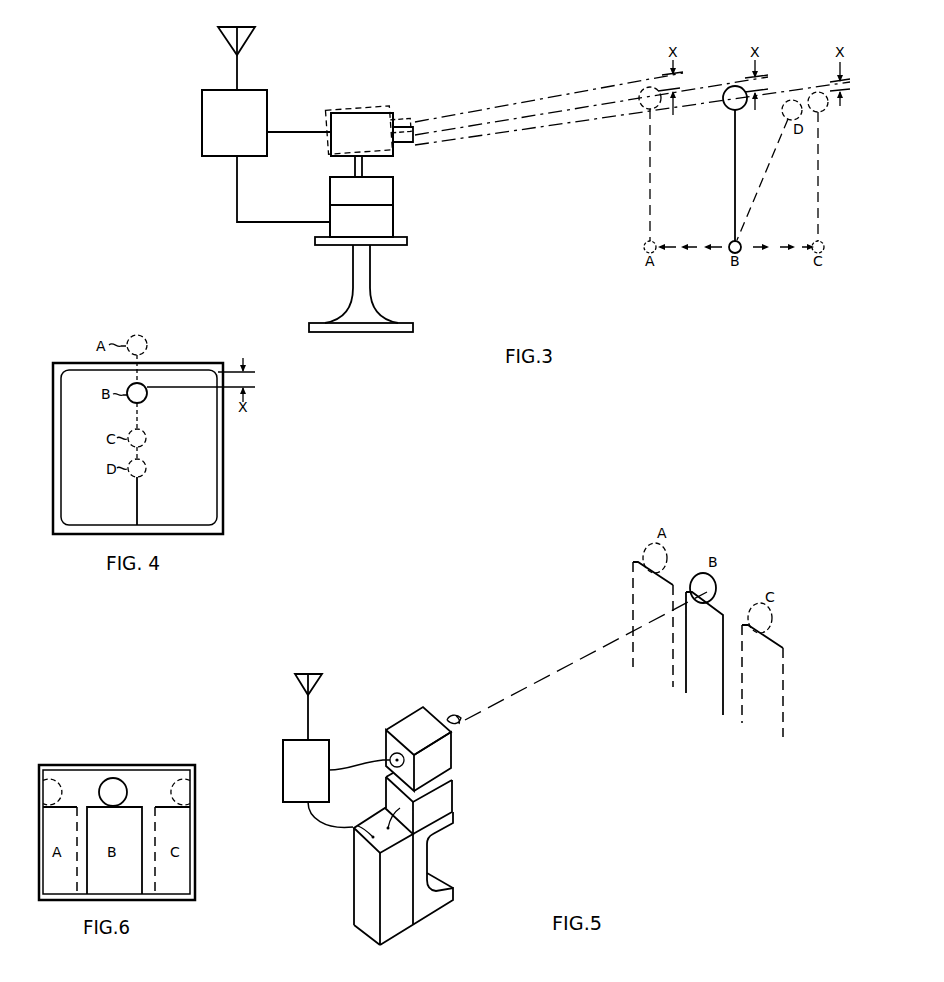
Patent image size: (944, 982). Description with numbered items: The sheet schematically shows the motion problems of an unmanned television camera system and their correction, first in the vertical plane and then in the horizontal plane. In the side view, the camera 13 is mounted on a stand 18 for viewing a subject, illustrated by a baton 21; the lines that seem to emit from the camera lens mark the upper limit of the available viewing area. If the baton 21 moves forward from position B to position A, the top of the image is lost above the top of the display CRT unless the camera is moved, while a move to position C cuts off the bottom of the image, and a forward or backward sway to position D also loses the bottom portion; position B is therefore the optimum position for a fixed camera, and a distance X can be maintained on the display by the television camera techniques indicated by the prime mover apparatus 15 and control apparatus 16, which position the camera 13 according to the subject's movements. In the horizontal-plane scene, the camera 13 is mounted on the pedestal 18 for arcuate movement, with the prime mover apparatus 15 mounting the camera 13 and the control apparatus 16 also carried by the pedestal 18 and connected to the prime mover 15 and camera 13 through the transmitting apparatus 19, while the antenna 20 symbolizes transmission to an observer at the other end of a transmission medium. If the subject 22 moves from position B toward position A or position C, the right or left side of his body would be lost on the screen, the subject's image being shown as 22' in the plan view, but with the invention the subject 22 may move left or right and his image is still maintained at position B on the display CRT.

In FIG. 3, the camera 13 is at (358, 120).
In FIG. 5, the camera 13 is at (431, 691).
In FIG. 3, the prime mover apparatus 15 is at (393, 191).
In FIG. 5, the prime mover apparatus 15 is at (451, 792).
In FIG. 3, the control apparatus 16 is at (393, 221).
In FIG. 5, the control apparatus 16 is at (356, 887).
In FIG. 3, the stand 18 is at (370, 277).
In FIG. 5, the stand 18 is at (427, 866).
In FIG. 3, the transmitting apparatus 19 is at (205, 105).
In FIG. 5, the transmitting apparatus 19 is at (283, 767).
In FIG. 3, the antenna 20 is at (219, 34).
In FIG. 5, the antenna 20 is at (322, 682).
In FIG. 3, the baton 21 is at (735, 162).
In FIG. 4, the baton 21 is at (138, 504).
In FIG. 5, the subject 22 is at (703, 647).
In FIG. 6, the target marker (plan view) 22' is at (113, 774).